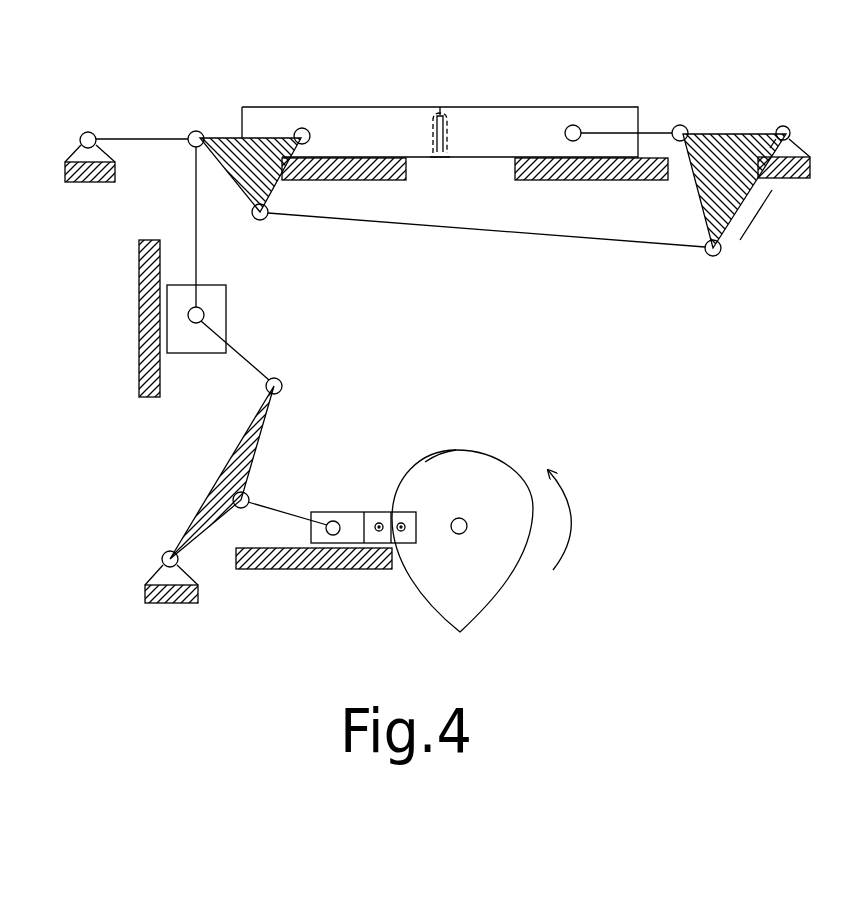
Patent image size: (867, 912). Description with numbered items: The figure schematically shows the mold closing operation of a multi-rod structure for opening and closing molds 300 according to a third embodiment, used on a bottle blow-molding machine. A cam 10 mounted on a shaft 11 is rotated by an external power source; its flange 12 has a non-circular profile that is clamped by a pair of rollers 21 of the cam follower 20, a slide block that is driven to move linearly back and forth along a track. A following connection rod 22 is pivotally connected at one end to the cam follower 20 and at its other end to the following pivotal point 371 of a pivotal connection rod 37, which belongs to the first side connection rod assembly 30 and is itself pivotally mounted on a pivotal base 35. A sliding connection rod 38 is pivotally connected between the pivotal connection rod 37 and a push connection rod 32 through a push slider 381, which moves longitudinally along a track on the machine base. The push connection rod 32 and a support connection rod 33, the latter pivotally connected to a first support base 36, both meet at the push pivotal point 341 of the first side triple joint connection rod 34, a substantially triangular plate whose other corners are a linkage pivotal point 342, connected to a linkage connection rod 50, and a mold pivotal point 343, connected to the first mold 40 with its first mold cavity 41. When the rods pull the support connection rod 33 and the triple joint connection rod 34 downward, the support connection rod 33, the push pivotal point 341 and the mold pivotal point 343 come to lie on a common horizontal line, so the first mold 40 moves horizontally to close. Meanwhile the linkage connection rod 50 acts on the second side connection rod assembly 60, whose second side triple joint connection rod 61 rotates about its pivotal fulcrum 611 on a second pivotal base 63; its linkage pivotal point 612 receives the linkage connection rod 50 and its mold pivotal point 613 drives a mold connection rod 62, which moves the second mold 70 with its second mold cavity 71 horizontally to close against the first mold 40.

The multi-rod structure for opening and closing molds 300 is at (68, 71).
The cam 10 is at (496, 466).
The shaft 11 is at (458, 517).
The flange 12 is at (440, 458).
The cam follower 20 is at (348, 512).
The rollers 21 is at (402, 532).
The following connection rod 22 is at (303, 513).
The first side connection rod assembly 30 is at (126, 320).
The push connection rod 32 is at (195, 235).
The support connection rod 33 is at (135, 138).
The first side triple joint connection rod 34 is at (220, 137).
The pivotal base 35 is at (162, 575).
The first support base 36 is at (76, 158).
The pivotal connection rod 37 is at (232, 462).
The sliding connection rod 38 is at (252, 360).
The push pivotal point 341 is at (192, 147).
The linkage pivotal point 342 is at (268, 220).
The mold pivotal point 343 is at (303, 127).
The following pivotal point 371 is at (238, 509).
The push slider 381 is at (215, 300).
The first mold 40 is at (378, 107).
The first mold cavity 41 is at (436, 160).
The linkage connection rod 50 is at (488, 233).
The second side connection rod assembly 60 is at (754, 210).
The second side triple joint connection rod 61 is at (745, 134).
The mold connection rod 62 is at (640, 130).
The second pivotal base 63 is at (802, 152).
The pivotal fulcrum 611 is at (788, 126).
The linkage pivotal point 612 is at (713, 257).
The mold pivotal point 613 is at (682, 126).
The second mold 70 is at (509, 107).
The second mold cavity 71 is at (445, 160).